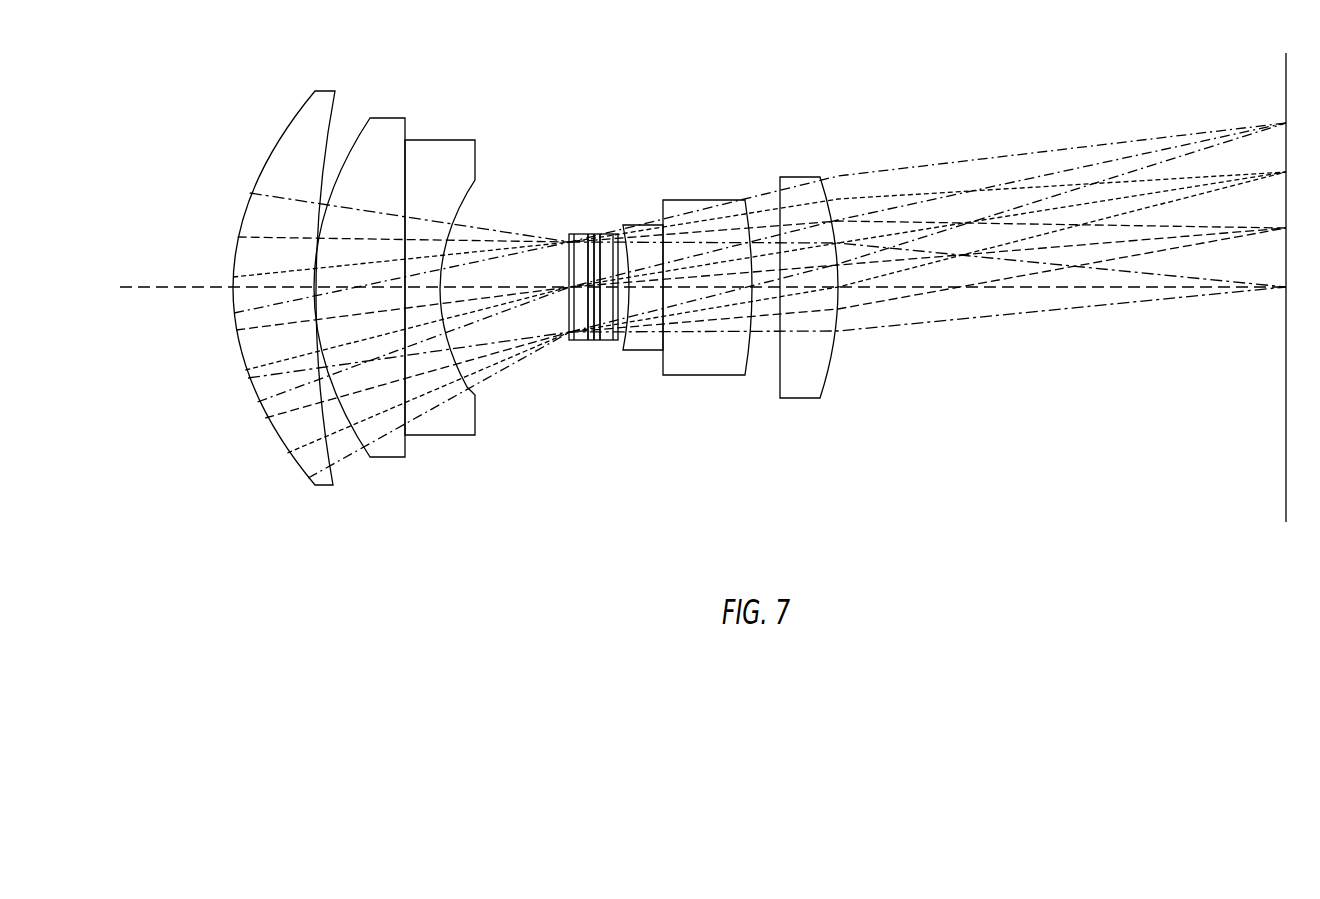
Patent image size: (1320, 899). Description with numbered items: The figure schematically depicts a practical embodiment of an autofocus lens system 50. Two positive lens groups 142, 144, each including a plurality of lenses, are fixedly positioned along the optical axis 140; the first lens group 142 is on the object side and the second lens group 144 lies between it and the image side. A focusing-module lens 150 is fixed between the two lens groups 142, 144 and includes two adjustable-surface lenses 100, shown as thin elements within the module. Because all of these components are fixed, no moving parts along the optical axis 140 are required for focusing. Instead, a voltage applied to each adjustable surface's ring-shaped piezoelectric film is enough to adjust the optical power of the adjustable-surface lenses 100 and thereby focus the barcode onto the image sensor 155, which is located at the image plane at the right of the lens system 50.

The autofocus lens system 50 is at (757, 309).
The adjustable-surface lens 100 is at (608, 233).
The optical axis 140 is at (199, 286).
The positive lens group 142 is at (475, 75).
The positive lens group 144 is at (623, 147).
The focusing-module lens 150 is at (555, 355).
The image sensor 155 is at (1286, 505).